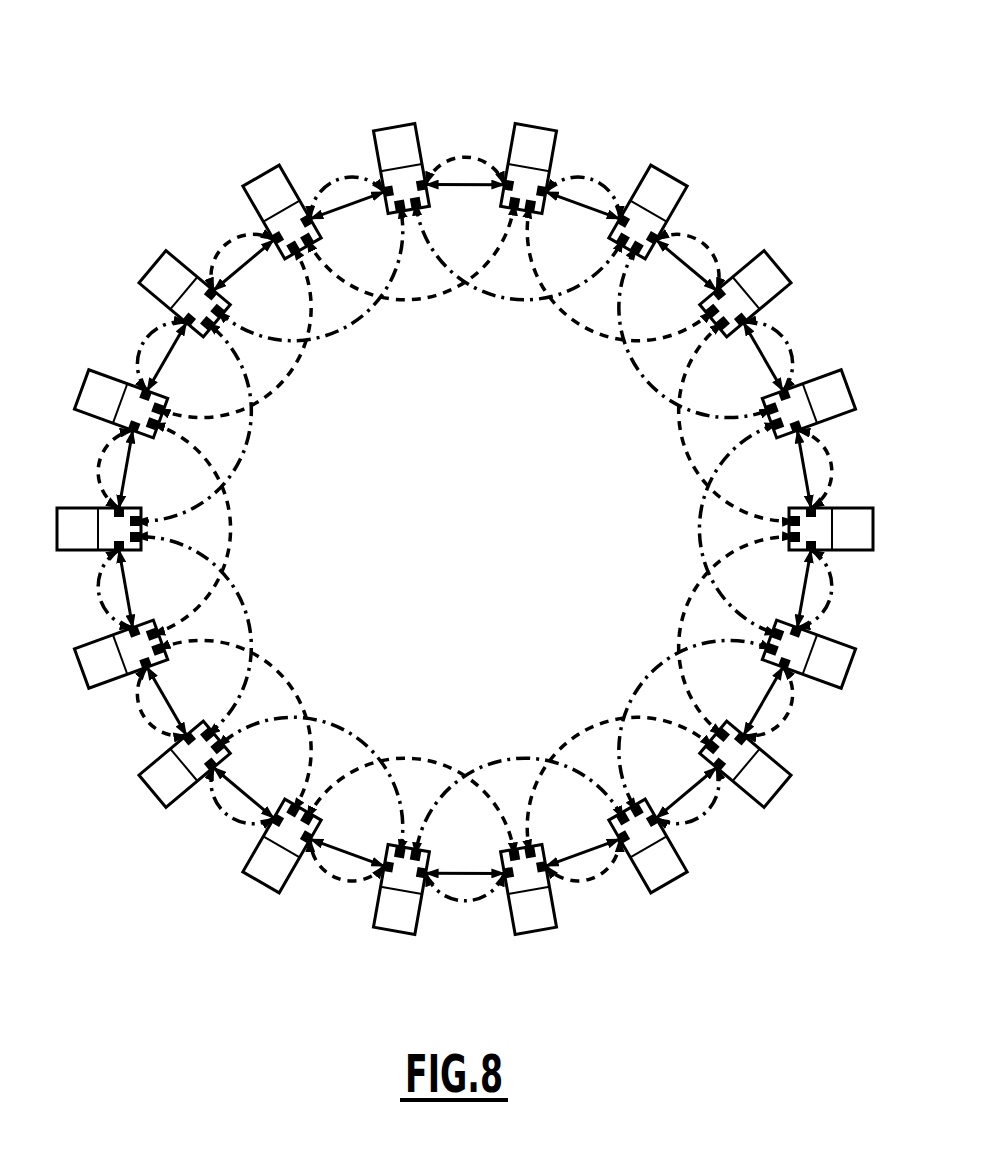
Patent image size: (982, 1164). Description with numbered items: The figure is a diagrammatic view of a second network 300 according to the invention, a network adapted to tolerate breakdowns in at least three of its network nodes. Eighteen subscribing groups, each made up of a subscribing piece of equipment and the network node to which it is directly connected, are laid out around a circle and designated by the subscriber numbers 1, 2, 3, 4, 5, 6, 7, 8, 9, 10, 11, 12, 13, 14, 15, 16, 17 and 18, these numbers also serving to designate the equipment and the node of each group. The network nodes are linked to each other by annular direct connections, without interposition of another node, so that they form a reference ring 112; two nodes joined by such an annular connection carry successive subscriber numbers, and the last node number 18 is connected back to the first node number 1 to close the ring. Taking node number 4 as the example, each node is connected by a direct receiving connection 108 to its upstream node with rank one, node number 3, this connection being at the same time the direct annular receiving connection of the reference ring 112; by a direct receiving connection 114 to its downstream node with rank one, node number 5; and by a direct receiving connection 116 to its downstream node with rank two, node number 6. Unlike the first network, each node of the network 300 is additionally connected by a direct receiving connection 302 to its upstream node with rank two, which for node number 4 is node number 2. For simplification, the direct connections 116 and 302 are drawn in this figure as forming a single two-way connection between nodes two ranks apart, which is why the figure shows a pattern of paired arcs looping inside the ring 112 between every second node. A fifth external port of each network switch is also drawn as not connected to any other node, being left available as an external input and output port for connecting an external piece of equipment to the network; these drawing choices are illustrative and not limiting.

The network 300 is at (245, 82).
The direct receiving connection 108 is at (706, 236).
The direct receiving connection 114 is at (791, 348).
The direct receiving connection 302 is at (617, 285).
The direct receiving connection 116 is at (723, 436).
The reference ring 112 is at (195, 845).
The subscriber number 1 is at (383, 142).
The subscriber number 2 is at (529, 155).
The subscriber number 3 is at (648, 202).
The subscriber number 4 is at (748, 287).
The subscriber number 5 is at (817, 404).
The subscriber number 6 is at (844, 529).
The subscriber number 7 is at (816, 654).
The subscriber number 8 is at (746, 768).
The subscriber number 9 is at (648, 858).
The subscriber number 10 is at (529, 905).
The subscriber number 11 is at (401, 905).
The subscriber number 12 is at (277, 858).
The subscriber number 13 is at (174, 770).
The subscriber number 14 is at (102, 654).
The subscriber number 15 is at (81, 529).
The subscriber number 16 is at (104, 404).
The subscriber number 17 is at (173, 288).
The subscriber number 18 is at (276, 203).